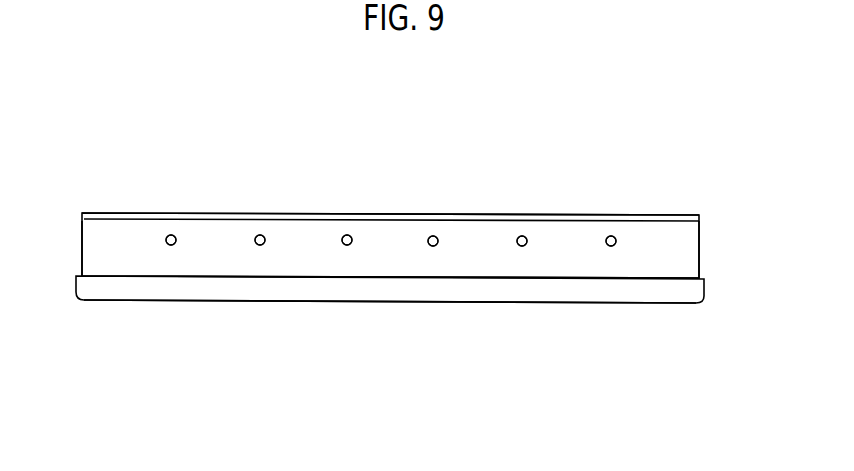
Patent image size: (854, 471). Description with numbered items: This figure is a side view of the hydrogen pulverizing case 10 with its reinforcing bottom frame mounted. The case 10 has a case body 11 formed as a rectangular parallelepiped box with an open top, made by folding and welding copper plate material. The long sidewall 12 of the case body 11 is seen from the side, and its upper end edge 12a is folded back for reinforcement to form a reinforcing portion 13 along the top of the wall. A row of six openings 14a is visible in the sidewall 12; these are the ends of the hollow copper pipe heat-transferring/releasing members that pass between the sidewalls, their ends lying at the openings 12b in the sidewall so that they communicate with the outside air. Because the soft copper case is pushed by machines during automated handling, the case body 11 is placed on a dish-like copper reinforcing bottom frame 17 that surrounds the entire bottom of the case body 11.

The case 10 is at (703, 209).
The case body 11 is at (645, 278).
The sidewalls 12 is at (478, 233).
The upper end edges 12a is at (225, 215).
The openings 12b is at (391, 240).
The reinforcing portion 13 is at (642, 215).
The openings 14a is at (345, 245).
The reinforcing bottom frame 17 is at (393, 292).